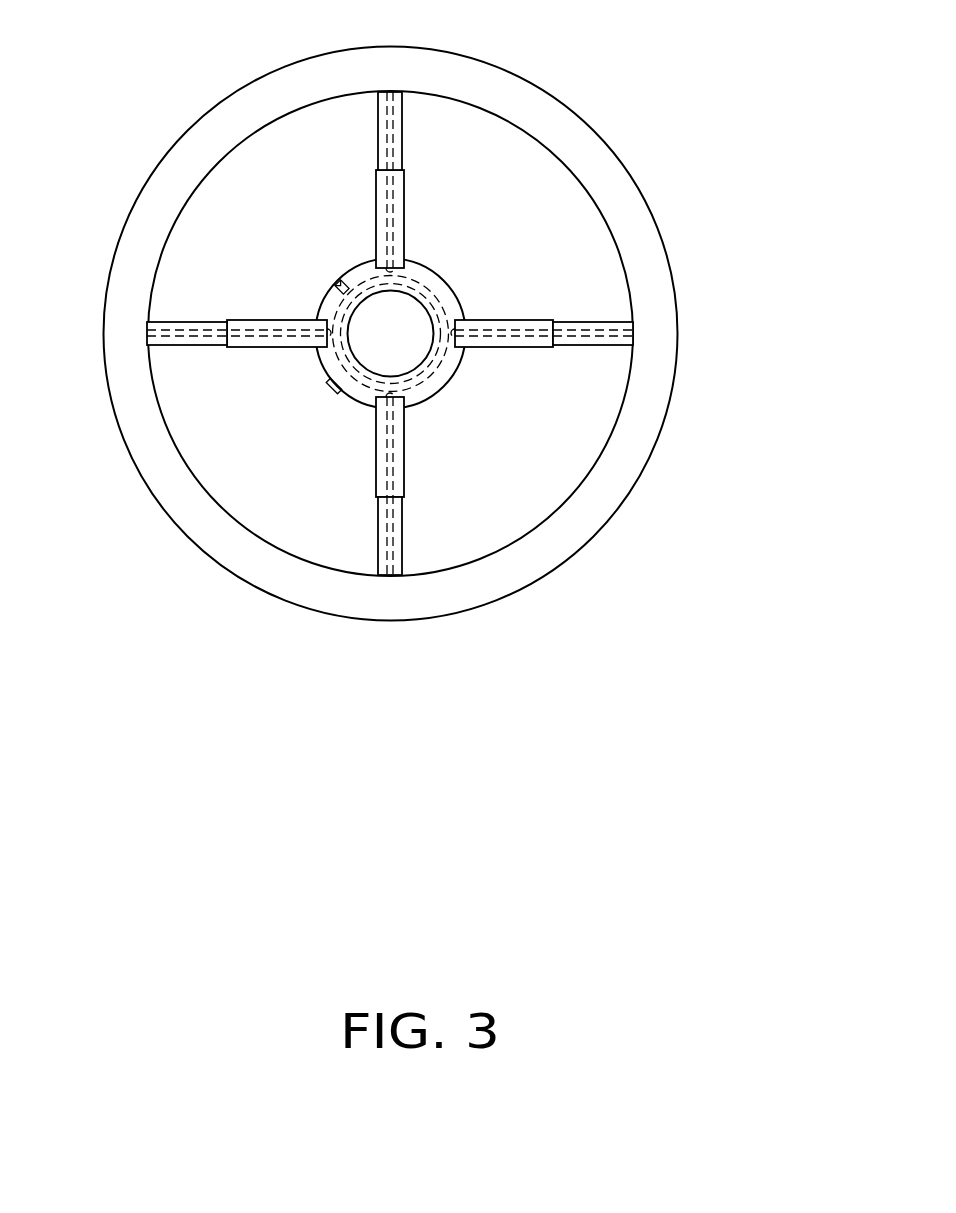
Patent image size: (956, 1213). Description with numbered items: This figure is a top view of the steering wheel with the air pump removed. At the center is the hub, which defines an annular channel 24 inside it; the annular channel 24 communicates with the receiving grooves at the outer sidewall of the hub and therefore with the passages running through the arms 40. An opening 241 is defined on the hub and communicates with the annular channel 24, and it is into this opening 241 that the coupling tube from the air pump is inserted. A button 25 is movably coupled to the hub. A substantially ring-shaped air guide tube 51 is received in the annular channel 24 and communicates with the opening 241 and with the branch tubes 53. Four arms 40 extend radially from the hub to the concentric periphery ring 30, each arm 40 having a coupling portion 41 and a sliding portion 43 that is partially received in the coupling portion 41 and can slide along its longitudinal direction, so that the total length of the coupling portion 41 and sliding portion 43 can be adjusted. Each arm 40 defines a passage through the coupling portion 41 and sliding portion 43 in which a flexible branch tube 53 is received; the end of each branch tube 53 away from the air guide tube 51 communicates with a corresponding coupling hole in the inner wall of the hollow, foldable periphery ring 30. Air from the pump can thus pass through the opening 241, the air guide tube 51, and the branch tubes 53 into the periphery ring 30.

The annular channel 24 is at (323, 290).
The opening 241 is at (340, 283).
The button 25 is at (337, 393).
The periphery ring 30 is at (657, 327).
The arm 40 is at (438, 387).
The coupling portion 41 is at (399, 459).
The sliding portion 43 is at (399, 533).
The air guide tube 51 is at (425, 290).
The branch tube 53 is at (515, 333).